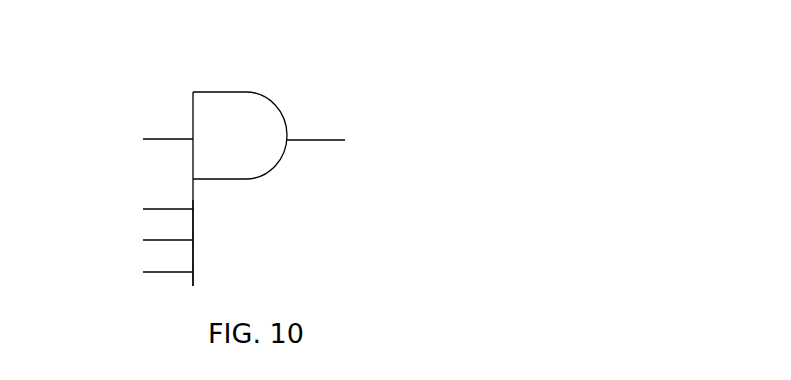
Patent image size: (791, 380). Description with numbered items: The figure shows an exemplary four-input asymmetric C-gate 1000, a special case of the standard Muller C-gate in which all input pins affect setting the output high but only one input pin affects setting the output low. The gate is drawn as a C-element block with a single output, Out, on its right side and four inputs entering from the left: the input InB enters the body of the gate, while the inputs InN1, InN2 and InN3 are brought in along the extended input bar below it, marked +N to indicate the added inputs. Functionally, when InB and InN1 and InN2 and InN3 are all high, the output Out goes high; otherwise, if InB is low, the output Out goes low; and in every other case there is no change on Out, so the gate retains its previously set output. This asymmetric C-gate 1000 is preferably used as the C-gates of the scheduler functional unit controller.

The asymmetric C-gate 1000 is at (279, 114).
The input pin InB is at (134, 139).
The gate output Out is at (346, 143).
The input pin InN1 is at (134, 210).
The input pin InN2 is at (134, 241).
The input pin InN3 is at (134, 273).
The N additional inputs N is at (217, 243).